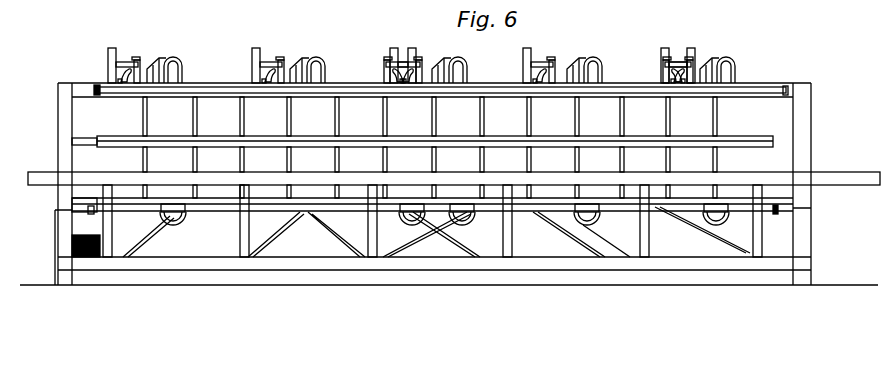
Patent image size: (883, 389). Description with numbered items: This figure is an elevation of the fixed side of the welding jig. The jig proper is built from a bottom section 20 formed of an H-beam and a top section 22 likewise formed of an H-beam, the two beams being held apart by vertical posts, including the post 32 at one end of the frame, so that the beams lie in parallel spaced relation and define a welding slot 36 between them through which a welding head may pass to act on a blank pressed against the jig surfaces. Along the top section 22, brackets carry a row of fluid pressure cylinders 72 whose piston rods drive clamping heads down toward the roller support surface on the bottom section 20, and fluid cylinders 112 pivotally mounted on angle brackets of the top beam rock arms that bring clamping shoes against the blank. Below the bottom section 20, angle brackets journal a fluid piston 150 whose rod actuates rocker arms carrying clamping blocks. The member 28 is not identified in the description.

The bottom section 20 is at (790, 162).
The top section 22 is at (796, 83).
The end frame wall 28 is at (806, 113).
The post 32 is at (62, 120).
The welding slot 36 is at (313, 136).
The fluid pressure cylinder 72 is at (140, 63).
The fluid cylinder 112 is at (700, 65).
The fluid piston 150 is at (710, 214).